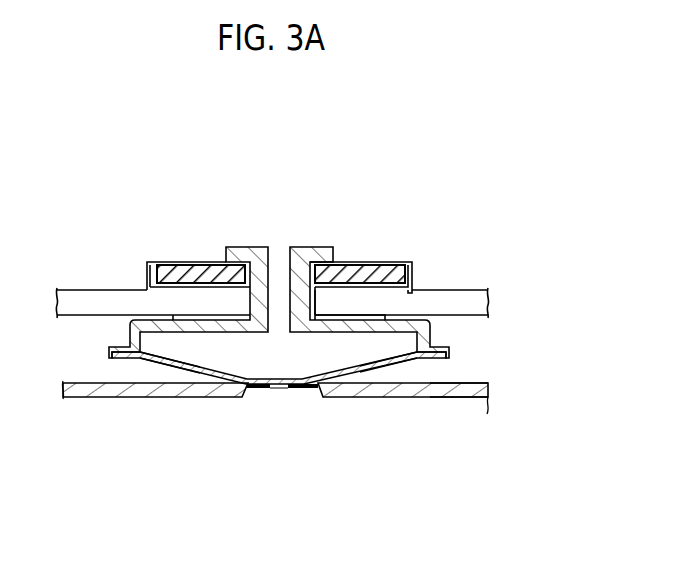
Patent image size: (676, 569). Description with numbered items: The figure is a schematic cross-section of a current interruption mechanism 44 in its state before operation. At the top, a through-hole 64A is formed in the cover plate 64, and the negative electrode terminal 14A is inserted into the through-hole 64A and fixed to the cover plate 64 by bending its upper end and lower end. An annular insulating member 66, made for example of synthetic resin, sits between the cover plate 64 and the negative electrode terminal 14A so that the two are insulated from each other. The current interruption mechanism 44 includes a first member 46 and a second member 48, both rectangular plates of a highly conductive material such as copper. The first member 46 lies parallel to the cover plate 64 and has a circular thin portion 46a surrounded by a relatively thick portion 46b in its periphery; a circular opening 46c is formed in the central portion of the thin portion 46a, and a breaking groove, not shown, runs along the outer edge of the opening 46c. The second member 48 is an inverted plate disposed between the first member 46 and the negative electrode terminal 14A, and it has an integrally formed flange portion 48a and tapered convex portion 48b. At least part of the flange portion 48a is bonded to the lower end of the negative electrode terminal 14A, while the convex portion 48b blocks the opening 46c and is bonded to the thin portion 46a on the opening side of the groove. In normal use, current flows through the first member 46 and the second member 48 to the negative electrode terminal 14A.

The negative electrode terminal 14A is at (240, 265).
The current interruption mechanism 44 is at (507, 350).
The first member 46 is at (85, 400).
The thin portion 46a is at (257, 389).
The thick portion 46b is at (466, 399).
The opening 46c is at (282, 390).
The second member 48 is at (187, 373).
The flange portion 48a is at (133, 362).
The convex portion 48b is at (378, 368).
The cover plate 64 is at (95, 290).
The through-hole 64A is at (312, 297).
The insulating member 66 is at (183, 263).